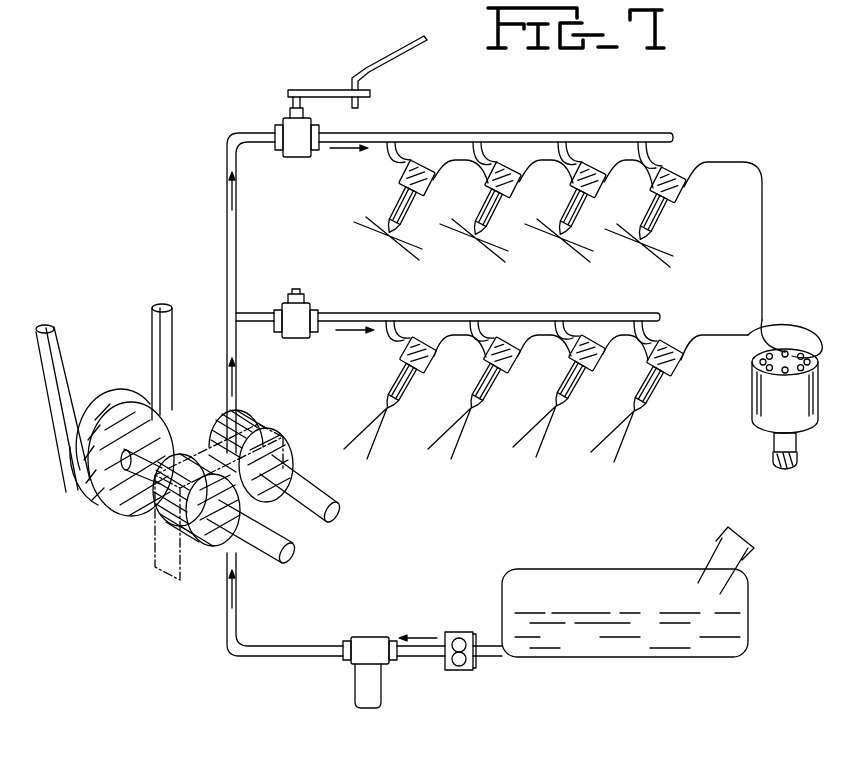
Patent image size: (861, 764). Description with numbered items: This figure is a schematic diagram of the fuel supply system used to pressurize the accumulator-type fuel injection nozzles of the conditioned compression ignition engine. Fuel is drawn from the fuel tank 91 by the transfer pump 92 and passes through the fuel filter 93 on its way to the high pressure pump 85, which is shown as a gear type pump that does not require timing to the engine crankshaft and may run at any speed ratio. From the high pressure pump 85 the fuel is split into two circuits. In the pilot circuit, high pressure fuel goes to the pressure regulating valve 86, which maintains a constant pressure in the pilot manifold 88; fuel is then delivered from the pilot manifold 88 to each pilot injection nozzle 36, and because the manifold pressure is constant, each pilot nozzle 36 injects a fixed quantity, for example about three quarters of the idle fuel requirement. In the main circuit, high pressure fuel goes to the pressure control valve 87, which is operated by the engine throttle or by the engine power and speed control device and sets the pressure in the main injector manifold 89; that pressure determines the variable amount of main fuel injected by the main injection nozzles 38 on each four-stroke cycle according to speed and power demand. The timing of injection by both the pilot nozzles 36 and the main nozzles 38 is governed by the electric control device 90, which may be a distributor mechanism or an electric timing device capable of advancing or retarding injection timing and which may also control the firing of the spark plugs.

The pilot injection nozzle 36 is at (412, 368).
The main injection nozzle 38 is at (402, 198).
The high pressure pump 85 is at (167, 543).
The pressure regulating valve 86 is at (300, 290).
The pressure control valve 87 is at (292, 128).
The pilot manifold 88 is at (408, 312).
The main injector manifold 89 is at (460, 137).
The electric control device 90 is at (766, 432).
The fuel tank 91 is at (637, 653).
The transfer pump 92 is at (453, 673).
The fuel filter 93 is at (363, 677).